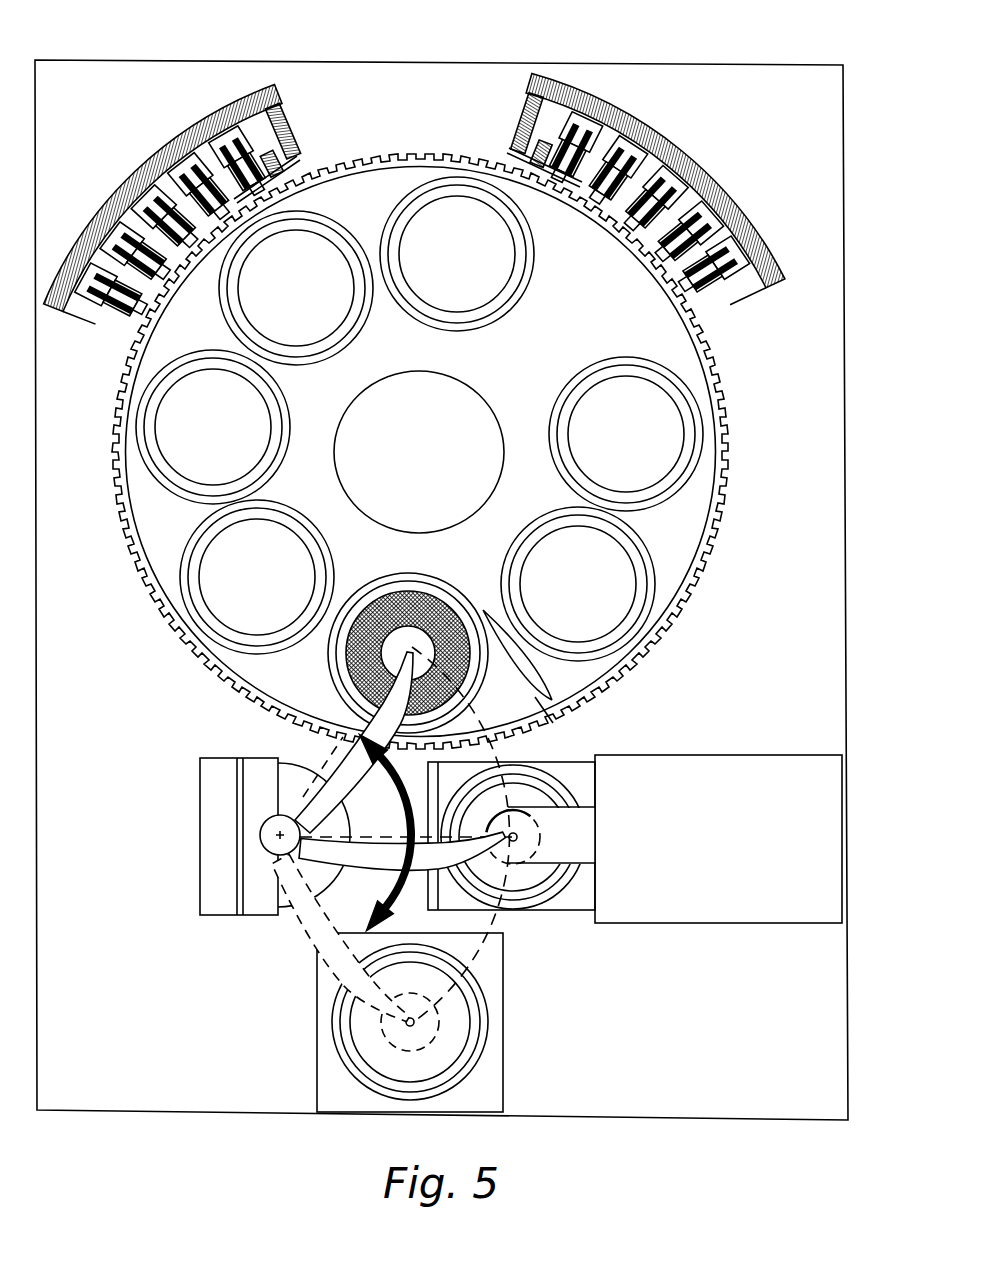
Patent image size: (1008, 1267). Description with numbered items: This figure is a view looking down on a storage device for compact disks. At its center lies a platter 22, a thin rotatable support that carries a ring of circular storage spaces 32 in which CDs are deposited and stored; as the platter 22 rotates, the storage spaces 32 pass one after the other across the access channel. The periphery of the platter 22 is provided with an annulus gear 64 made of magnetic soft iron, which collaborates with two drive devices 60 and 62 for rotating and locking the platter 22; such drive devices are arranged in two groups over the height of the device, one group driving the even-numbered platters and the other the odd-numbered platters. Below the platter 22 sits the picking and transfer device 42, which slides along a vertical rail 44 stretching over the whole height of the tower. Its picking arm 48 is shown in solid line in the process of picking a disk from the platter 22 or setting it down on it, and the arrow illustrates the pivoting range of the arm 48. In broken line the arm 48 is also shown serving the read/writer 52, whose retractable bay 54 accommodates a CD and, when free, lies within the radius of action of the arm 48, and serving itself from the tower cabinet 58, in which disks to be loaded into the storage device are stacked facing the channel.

The platter 22 is at (555, 715).
The storage space 32 is at (673, 437).
The picking and transfer device 42 is at (290, 843).
The vertical rail 44 is at (212, 808).
The picking arm 48 is at (345, 772).
The read/writer 52 is at (715, 757).
The retractable bay 54 is at (583, 903).
The tower cabinet 58 is at (502, 1028).
The drive device 60 is at (170, 120).
The drive device 62 is at (617, 105).
The annulus gear 64 is at (718, 346).